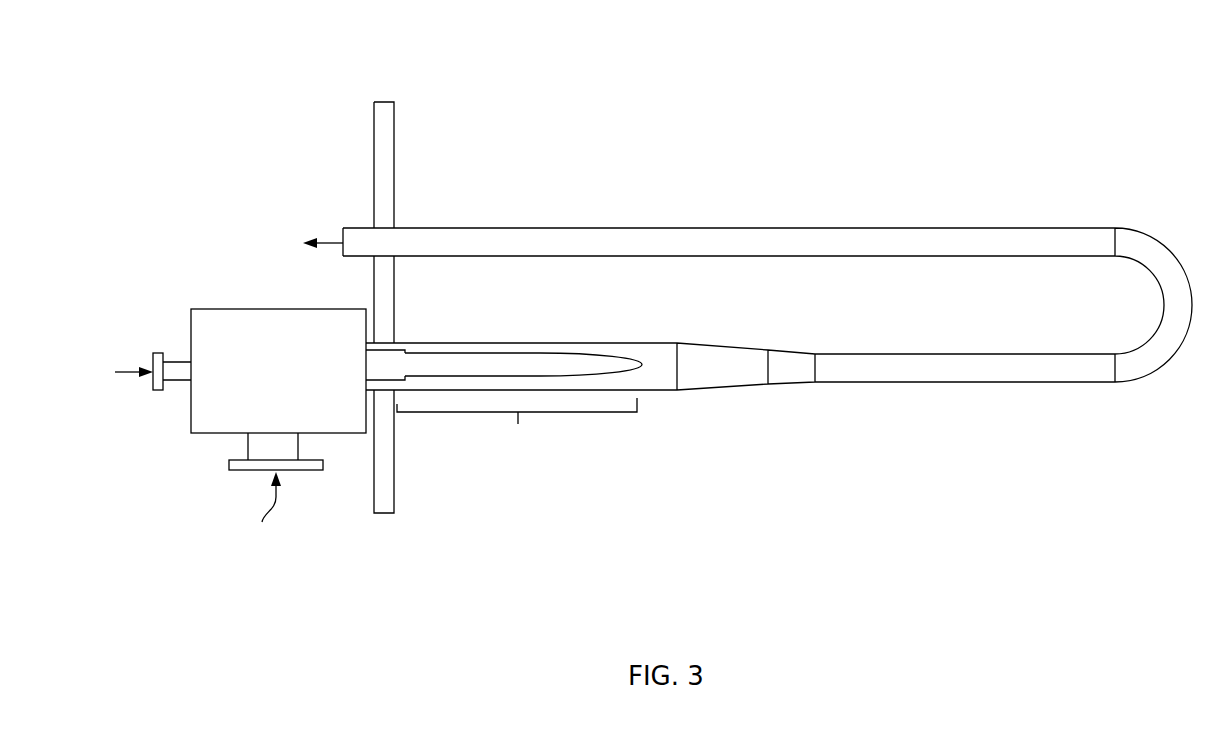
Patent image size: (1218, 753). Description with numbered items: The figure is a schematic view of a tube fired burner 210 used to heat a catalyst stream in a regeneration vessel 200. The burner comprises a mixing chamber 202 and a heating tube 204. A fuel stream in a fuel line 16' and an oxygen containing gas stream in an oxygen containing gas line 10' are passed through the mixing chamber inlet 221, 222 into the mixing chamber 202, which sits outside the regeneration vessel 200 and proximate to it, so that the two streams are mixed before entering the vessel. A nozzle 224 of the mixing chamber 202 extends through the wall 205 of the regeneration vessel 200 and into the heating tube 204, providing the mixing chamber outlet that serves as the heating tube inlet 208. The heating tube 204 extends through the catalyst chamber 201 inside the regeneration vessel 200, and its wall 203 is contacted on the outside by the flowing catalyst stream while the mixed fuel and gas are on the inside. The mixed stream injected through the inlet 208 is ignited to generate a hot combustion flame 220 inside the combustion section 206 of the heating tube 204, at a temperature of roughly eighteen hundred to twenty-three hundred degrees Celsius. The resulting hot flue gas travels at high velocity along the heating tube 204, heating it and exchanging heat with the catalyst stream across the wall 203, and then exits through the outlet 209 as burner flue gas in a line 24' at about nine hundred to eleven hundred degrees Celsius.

The regeneration vessel 200 is at (128, 77).
The tube fired burner 210 is at (227, 199).
The wall of the regeneration vessel 205 is at (373, 140).
The wall of the heating tube 203 is at (890, 242).
The heating tube 204 is at (737, 229).
The catalyst chamber 201 is at (829, 314).
The heating tube inlet 208 is at (408, 352).
The hot combustion flame 220 is at (593, 353).
The nozzle 224 is at (377, 348).
The combustion section 206 is at (517, 427).
The heating tube outlet 209 is at (343, 233).
The burner flue gas line 24' is at (318, 260).
The mixing chamber 202 is at (232, 309).
The mixing chamber inlet 222 is at (158, 353).
The oxygen containing gas line 10' is at (111, 357).
The mixing chamber inlet 221 is at (228, 463).
The fuel line 16' is at (263, 515).